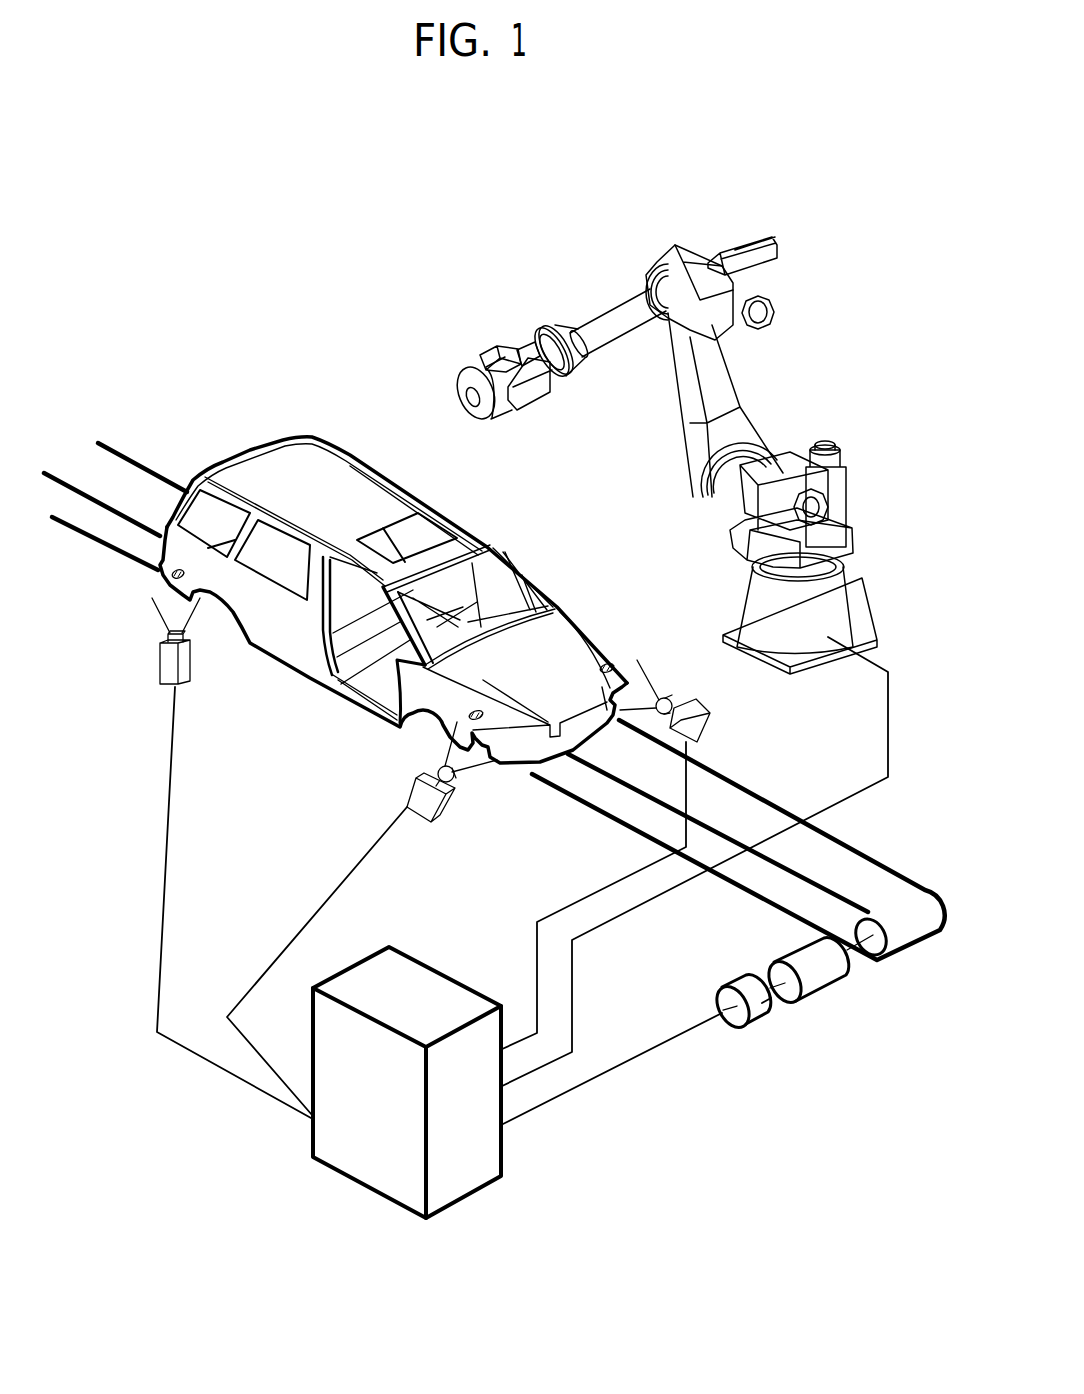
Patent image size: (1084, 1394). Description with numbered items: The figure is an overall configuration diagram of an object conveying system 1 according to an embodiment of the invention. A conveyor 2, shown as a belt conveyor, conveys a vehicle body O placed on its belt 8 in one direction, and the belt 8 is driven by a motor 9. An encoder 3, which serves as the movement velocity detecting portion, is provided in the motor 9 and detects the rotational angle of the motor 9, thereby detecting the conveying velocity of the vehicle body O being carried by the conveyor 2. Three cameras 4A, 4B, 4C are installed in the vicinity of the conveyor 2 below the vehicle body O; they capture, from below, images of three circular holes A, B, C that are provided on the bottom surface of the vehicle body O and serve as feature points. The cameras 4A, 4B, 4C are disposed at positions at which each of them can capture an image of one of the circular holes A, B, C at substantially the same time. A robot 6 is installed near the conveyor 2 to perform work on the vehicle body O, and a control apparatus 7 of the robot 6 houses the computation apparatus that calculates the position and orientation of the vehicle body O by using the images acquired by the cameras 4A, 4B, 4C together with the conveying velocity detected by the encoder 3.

The object conveying system 1 is at (274, 234).
The conveyor 2 is at (72, 448).
The encoder 3 is at (762, 1010).
The camera 4A is at (167, 668).
The camera 4B is at (418, 792).
The camera 4C is at (705, 717).
The robot 6 is at (604, 273).
The control apparatus 7 is at (372, 1163).
The belt 8 is at (907, 932).
The motor 9 is at (812, 975).
The vehicle body O is at (257, 465).
The circular hole A is at (163, 577).
The circular hole B is at (466, 713).
The circular hole C is at (603, 664).